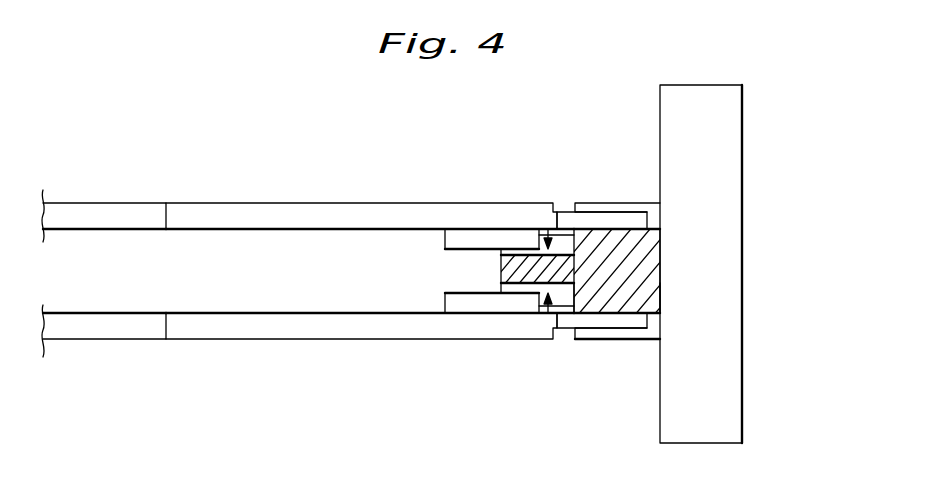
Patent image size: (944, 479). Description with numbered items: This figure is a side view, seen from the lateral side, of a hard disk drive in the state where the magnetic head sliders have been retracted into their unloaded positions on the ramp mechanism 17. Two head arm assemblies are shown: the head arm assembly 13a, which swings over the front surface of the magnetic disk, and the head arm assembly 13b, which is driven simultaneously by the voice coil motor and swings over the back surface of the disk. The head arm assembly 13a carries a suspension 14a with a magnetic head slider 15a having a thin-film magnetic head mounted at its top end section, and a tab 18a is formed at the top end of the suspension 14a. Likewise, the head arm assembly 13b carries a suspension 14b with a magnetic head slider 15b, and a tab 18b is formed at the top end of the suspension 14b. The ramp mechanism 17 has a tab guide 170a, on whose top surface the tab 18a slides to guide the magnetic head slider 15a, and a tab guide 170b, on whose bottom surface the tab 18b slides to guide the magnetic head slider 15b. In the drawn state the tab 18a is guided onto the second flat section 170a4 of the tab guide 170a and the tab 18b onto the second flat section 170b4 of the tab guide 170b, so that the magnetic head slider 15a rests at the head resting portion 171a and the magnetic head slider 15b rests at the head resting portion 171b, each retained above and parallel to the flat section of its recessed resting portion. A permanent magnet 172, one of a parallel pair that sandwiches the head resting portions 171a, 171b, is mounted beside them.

The head arm assembly 13a is at (123, 212).
The head arm assembly 13b is at (129, 330).
The suspension 14a is at (353, 207).
The suspension 14b is at (386, 327).
The magnetic head slider 15a is at (444, 238).
The magnetic head slider 15b is at (444, 300).
The ramp mechanism 17 is at (763, 102).
The tab 18a is at (561, 218).
The tab 18b is at (563, 328).
The tab guide 170a is at (640, 203).
The tab guide 170b is at (613, 340).
The second flat section 170a4 is at (615, 207).
The second flat section 170b4 is at (615, 314).
The head resting portion 171a is at (548, 229).
The head resting portion 171b is at (547, 313).
The permanent magnet 172 is at (501, 289).